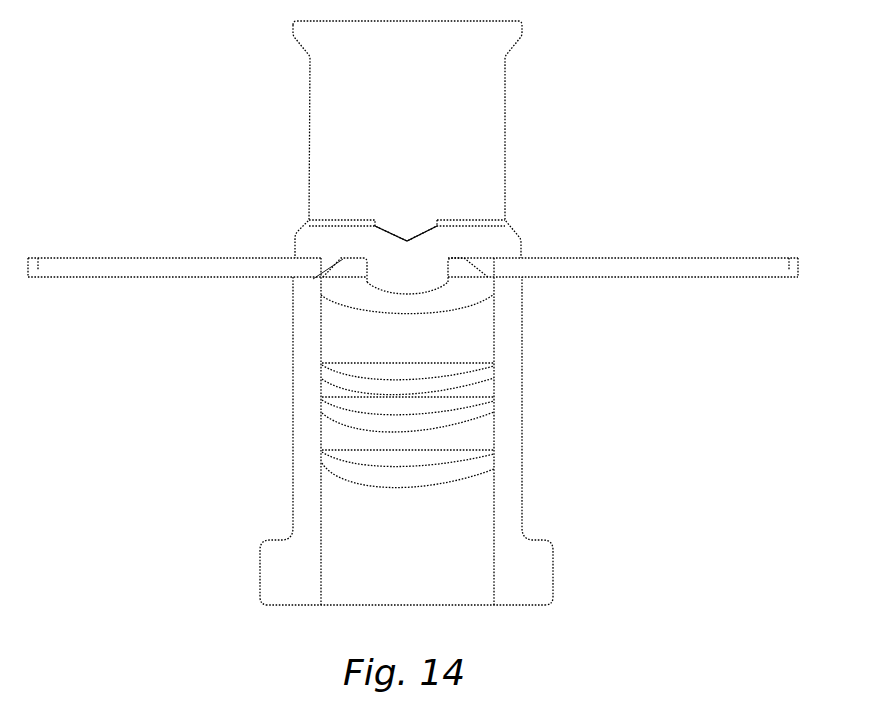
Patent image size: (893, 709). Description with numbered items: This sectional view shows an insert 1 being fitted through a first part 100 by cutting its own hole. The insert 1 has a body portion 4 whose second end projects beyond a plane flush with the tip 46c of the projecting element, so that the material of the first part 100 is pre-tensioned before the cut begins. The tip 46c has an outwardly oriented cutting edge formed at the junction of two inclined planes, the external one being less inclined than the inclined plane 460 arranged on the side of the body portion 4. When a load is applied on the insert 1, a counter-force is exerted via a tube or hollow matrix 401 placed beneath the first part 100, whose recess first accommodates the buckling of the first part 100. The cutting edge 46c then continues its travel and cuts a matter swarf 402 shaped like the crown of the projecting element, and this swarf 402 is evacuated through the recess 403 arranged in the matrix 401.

The insert 1 is at (527, 221).
The first part 100 is at (668, 270).
The tip of the projecting element 46c is at (492, 268).
The inclined plane 460 is at (346, 285).
The matter swarf 402 is at (365, 300).
The recess 403 is at (482, 312).
The body portion 4 is at (425, 280).
The hollow matrix 401 is at (510, 477).